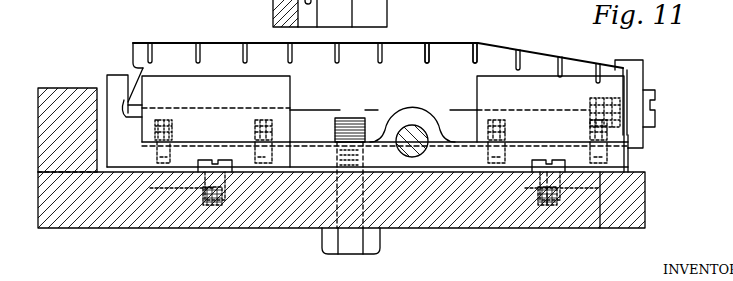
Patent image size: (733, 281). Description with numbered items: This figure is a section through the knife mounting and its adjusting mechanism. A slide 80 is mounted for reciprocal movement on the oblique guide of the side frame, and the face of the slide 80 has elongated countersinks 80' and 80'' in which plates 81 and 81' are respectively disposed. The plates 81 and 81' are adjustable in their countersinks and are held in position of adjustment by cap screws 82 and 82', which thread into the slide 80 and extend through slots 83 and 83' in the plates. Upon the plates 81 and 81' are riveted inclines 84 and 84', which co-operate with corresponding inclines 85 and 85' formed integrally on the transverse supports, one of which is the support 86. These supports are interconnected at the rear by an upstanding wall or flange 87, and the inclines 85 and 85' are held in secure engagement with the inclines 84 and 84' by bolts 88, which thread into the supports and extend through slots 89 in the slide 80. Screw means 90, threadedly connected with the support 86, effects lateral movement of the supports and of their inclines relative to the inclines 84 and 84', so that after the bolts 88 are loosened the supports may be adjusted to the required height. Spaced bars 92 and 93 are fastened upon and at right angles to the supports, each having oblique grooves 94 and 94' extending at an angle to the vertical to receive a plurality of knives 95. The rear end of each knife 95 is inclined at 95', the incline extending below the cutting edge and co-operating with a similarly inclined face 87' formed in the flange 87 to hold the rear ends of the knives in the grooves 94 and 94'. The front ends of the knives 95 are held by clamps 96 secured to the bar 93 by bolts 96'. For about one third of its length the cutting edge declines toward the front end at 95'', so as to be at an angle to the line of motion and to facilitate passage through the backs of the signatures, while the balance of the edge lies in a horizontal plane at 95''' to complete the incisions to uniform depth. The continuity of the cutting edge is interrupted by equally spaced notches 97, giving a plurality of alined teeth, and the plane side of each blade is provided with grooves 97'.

The slide 80 is at (366, 171).
The elongated countersink 80' is at (109, 173).
The elongated countersink 80'' is at (593, 214).
The plate 81 is at (192, 214).
The plate 81' is at (552, 210).
The cap screw 82 is at (213, 145).
The cap screw 82' is at (547, 146).
The slot 83 is at (280, 252).
The slot 83' is at (539, 223).
The incline 84 is at (385, 128).
The incline 84' is at (650, 157).
The incline 85 is at (302, 154).
The incline 85' is at (663, 129).
The transverse support 86 is at (413, 133).
The upstanding wall or flange 87 is at (99, 112).
The inclined face 87' is at (148, 97).
The bolt 88 is at (366, 117).
The slot 89 is at (139, 170).
The screw means 90 is at (418, 136).
The bar 92 is at (216, 109).
The bar 93 is at (550, 109).
The oblique groove 94 is at (315, 99).
The oblique groove 94' is at (461, 101).
The knife 95 is at (378, 50).
The inclined rear end 95' is at (123, 60).
The declining cutting edge portion 95'' is at (586, 76).
The horizontal cutting edge portion 95''' is at (307, 21).
The clamp 96 is at (647, 102).
The bolt 96' is at (665, 107).
The notch 97 is at (487, 41).
The groove 97' is at (437, 41).